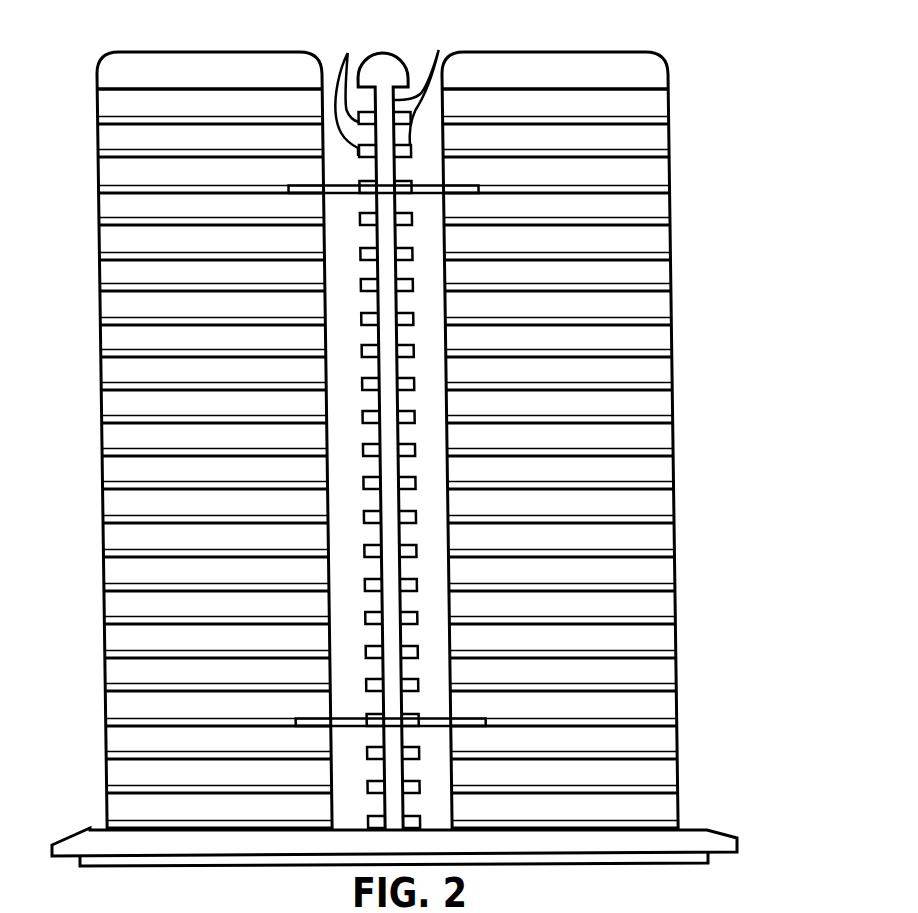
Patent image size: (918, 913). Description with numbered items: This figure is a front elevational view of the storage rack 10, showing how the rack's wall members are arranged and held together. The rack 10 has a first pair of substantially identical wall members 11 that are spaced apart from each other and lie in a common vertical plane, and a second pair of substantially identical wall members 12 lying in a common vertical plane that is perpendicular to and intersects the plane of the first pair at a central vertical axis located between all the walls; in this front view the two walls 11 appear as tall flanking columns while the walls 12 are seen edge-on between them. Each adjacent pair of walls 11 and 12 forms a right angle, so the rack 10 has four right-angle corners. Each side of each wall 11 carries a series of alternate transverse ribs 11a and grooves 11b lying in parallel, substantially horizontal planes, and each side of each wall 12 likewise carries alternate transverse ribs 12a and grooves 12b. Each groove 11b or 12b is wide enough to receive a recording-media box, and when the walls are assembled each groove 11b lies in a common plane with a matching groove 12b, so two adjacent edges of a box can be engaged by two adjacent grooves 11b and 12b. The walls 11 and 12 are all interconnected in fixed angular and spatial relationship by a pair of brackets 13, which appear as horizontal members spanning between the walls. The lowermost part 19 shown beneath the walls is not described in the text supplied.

The rack 10 is at (654, 41).
The wall member 11 is at (238, 52).
The transverse rib 11a is at (107, 290).
The groove 11b is at (107, 173).
The wall member 12 is at (385, 52).
The transverse rib 12a is at (346, 91).
The groove 12b is at (438, 86).
The bracket 13 is at (436, 190).
The base plate 19 is at (716, 830).